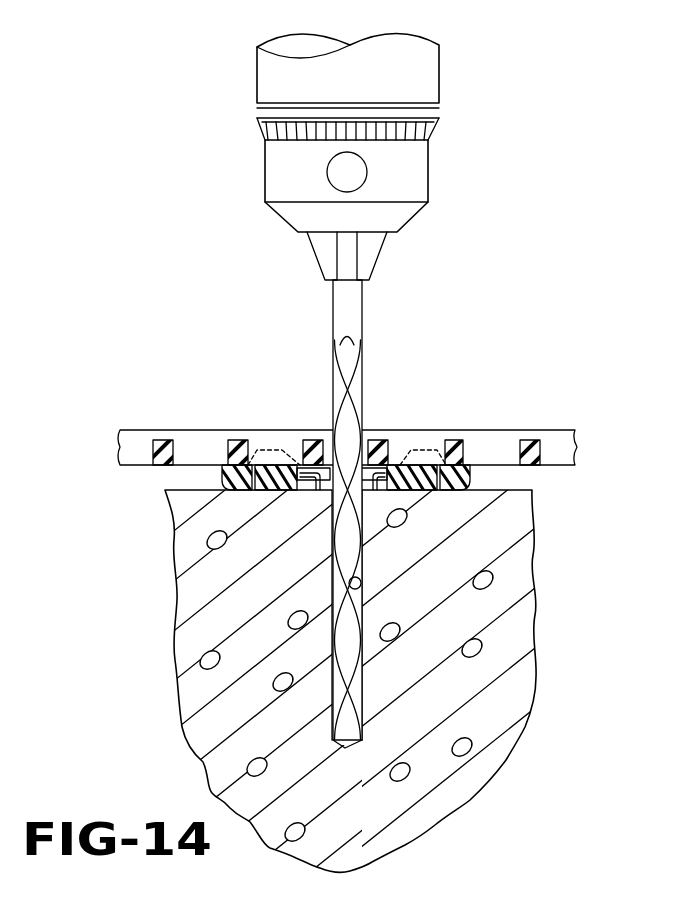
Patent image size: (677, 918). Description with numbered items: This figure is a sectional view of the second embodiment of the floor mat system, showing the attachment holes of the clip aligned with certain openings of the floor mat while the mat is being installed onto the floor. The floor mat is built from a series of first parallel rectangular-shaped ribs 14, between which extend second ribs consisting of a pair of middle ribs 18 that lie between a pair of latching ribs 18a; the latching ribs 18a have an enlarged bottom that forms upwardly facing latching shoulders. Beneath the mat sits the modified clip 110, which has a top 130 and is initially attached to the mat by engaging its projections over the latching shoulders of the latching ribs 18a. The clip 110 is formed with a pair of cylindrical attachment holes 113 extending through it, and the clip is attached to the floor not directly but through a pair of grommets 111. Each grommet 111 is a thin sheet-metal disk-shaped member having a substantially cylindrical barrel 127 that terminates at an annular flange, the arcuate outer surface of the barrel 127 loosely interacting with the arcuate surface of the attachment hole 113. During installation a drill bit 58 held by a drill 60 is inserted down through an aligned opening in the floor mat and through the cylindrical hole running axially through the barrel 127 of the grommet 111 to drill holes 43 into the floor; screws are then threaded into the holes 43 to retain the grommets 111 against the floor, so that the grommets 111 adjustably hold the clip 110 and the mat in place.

The first ribs 14 is at (557, 430).
The middle ribs 18 is at (163, 440).
The latching ribs 18a is at (237, 440).
The holes 43 is at (360, 578).
The drill bit 58 is at (354, 323).
The drill 60 is at (438, 79).
The clip 110 is at (264, 456).
The grommets 111 is at (400, 452).
The attachment holes 113 is at (322, 490).
The barrel 127 is at (313, 490).
The top 130 is at (418, 448).